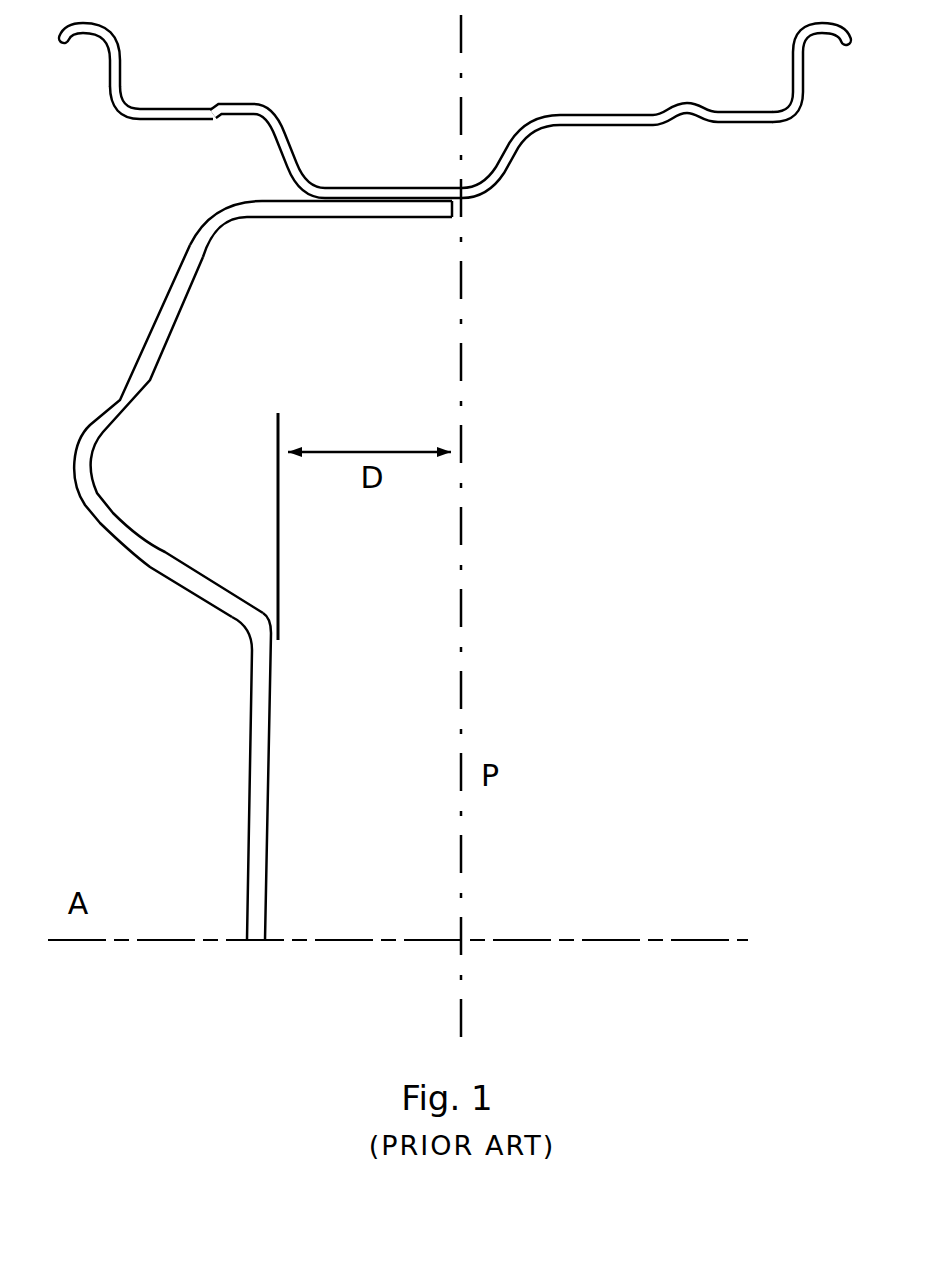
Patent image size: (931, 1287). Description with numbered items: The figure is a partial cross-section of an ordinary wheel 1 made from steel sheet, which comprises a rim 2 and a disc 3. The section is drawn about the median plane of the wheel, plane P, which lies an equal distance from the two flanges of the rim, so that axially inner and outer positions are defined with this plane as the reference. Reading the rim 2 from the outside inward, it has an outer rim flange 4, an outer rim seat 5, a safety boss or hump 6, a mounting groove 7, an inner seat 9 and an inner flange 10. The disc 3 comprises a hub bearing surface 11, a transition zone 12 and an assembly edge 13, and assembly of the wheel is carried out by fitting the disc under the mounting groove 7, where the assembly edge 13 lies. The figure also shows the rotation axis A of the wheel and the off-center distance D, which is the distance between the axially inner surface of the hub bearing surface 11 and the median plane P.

The wheel 1 is at (455, 474).
The rim 2 is at (455, 139).
The disc 3 is at (263, 570).
The outer rim flange 4 is at (117, 62).
The outer rim seat 5 is at (172, 117).
The safety boss or hump 6 is at (240, 100).
The mounting groove 7 is at (385, 195).
The inner seat 9 is at (740, 117).
The inner flange 10 is at (803, 58).
The hub bearing surface 11 is at (263, 793).
The transition zone 12 is at (83, 470).
The assembly edge 13 is at (337, 212).